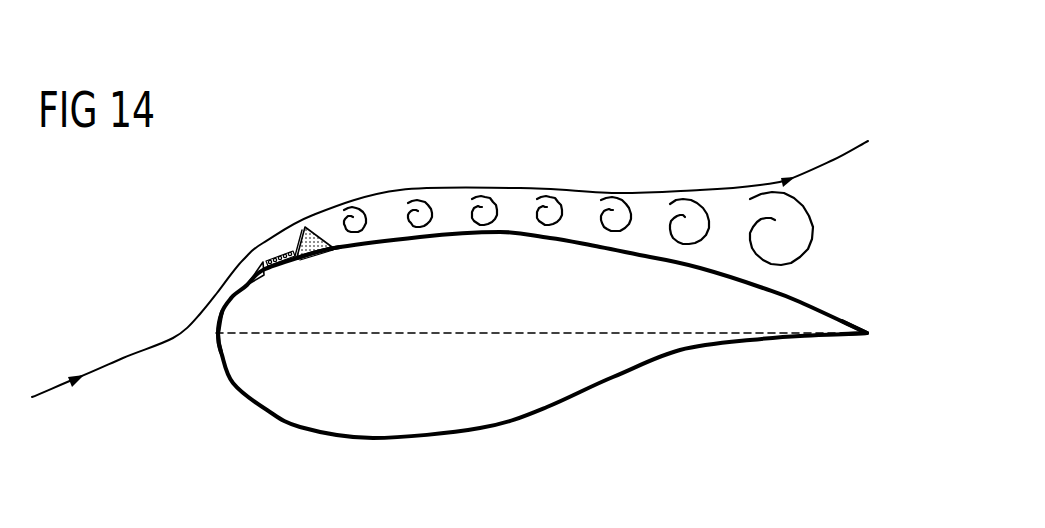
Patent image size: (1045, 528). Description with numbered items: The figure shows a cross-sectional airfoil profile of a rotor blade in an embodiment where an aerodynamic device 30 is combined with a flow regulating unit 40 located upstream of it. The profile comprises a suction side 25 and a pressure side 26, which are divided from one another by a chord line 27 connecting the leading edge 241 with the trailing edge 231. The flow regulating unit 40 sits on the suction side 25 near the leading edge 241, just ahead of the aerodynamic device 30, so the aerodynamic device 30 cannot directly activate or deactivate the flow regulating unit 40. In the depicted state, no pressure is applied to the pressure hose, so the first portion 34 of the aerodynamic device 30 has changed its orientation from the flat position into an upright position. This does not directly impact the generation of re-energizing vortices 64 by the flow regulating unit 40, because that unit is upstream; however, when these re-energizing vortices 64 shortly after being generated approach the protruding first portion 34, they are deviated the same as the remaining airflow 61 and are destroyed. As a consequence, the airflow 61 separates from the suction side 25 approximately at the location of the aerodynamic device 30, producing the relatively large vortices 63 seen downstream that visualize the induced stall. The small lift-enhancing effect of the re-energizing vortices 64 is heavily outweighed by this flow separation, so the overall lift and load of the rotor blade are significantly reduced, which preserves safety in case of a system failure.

The suction side 25 is at (800, 302).
The pressure side 26 is at (667, 358).
The chord line 27 is at (433, 335).
The trailing edge 231 is at (868, 334).
The leading edge 241 is at (216, 333).
The airflow 61 is at (122, 357).
The vortices 63 is at (359, 212).
The first portion 34 is at (305, 228).
The re-energizing vortices 64 is at (268, 253).
The flow regulating unit 40 is at (262, 276).
The aerodynamic device 30 is at (335, 267).